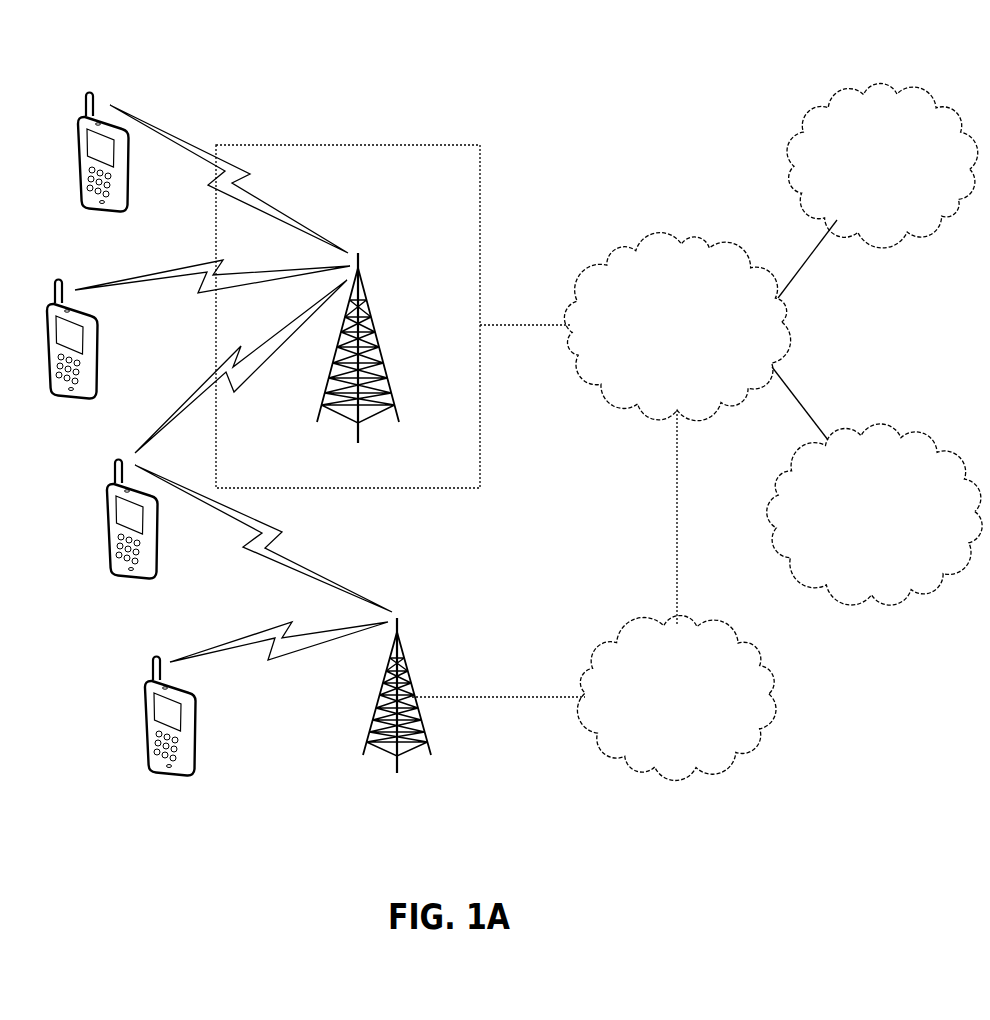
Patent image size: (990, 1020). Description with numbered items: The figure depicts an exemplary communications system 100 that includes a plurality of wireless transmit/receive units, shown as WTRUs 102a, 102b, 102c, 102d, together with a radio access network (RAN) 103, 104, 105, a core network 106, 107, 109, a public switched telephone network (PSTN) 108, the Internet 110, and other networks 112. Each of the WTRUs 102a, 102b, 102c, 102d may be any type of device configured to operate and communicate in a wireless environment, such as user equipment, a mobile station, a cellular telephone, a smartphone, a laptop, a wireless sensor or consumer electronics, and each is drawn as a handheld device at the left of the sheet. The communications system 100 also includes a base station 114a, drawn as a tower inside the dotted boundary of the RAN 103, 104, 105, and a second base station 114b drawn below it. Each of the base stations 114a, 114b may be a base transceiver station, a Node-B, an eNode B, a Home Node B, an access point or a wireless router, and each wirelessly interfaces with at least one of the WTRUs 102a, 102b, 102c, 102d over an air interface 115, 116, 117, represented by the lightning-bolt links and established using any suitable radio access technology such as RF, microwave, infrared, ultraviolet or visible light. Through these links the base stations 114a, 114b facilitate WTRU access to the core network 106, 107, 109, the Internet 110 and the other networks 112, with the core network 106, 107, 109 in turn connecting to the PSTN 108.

The communications system 100 is at (513, 31).
The wireless transmit/receive unit (WTRU) 102a is at (79, 155).
The wireless transmit/receive unit (WTRU) 102b is at (72, 362).
The wireless transmit/receive unit (WTRU) 102c is at (132, 538).
The wireless transmit/receive unit (WTRU) 102d is at (170, 735).
The radio access network (RAN) 103 is at (348, 316).
The radio access network (RAN) 104 is at (348, 316).
The radio access network (RAN) 105 is at (458, 204).
The core network 106 is at (677, 327).
The core network 107 is at (677, 327).
The core network 109 is at (618, 324).
The public switched telephone network (PSTN) 108 is at (902, 162).
The Internet 110 is at (697, 692).
The other networks 112 is at (857, 498).
The base station 114a is at (358, 364).
The base station 114b is at (397, 715).
The air interface 115 is at (243, 383).
The air interface 116 is at (243, 383).
The air interface 117 is at (243, 383).